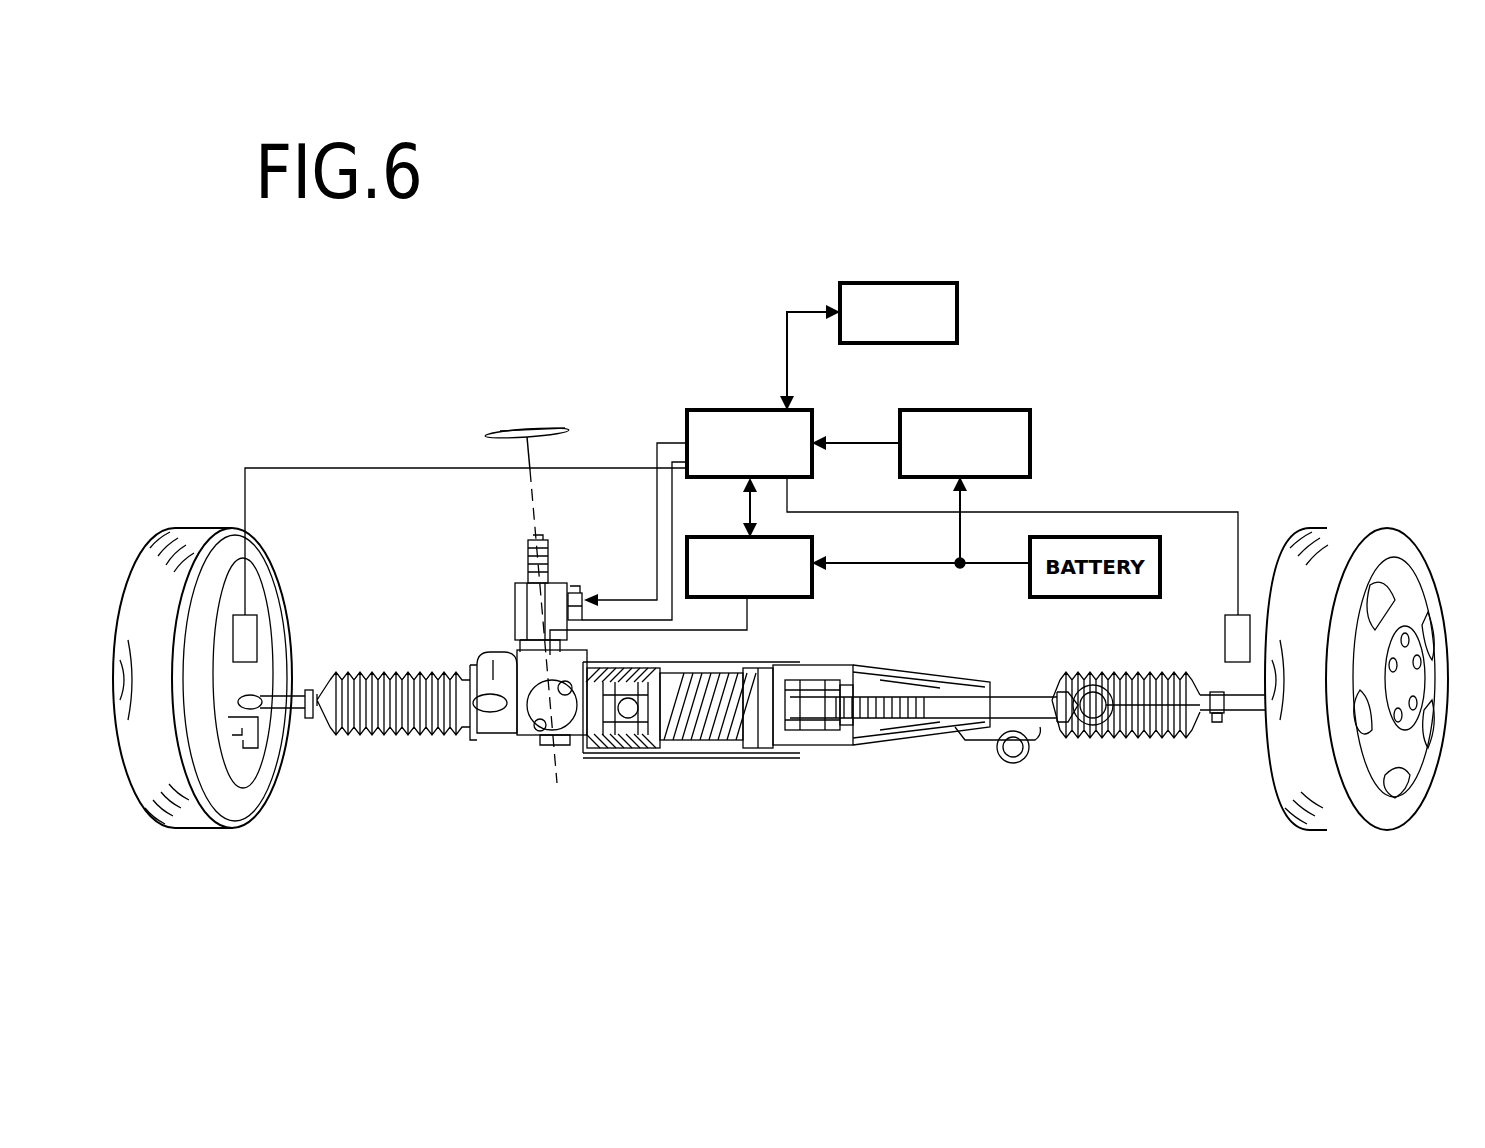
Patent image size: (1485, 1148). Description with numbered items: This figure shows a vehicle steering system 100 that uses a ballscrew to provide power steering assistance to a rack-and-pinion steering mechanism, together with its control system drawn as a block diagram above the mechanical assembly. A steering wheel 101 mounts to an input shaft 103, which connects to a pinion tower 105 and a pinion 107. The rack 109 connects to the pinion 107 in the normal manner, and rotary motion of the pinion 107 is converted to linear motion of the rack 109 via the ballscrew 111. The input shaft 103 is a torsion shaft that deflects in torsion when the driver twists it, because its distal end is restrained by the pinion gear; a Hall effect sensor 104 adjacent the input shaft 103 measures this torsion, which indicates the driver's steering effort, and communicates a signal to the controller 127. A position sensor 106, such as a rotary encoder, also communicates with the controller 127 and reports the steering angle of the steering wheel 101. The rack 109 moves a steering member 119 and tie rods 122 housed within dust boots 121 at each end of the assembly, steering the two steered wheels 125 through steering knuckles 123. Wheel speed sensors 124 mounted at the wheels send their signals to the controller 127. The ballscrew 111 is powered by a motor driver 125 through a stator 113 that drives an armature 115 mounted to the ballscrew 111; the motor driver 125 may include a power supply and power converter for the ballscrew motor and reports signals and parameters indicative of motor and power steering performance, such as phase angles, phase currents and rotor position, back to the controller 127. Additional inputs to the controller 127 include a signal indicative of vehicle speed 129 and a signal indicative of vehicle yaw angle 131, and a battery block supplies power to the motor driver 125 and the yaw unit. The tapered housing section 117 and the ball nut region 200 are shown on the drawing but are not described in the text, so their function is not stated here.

The vehicle steering system 100 is at (378, 395).
The steering wheel 101 is at (512, 428).
The input shaft 103 is at (527, 548).
The Hall effect sensor 104 is at (572, 592).
The pinion tower 105 is at (527, 603).
The position sensor 106 is at (612, 612).
The pinion 107 is at (493, 708).
The rack 109 is at (622, 690).
The ballscrew 111 is at (893, 688).
The stator 113 is at (707, 755).
The armature 115 is at (712, 665).
The ball screw housing 117 is at (825, 665).
The steering member 119 is at (967, 692).
The dust boot 121 is at (363, 737).
The tie rod 122 is at (1153, 707).
The steering knuckle 123 is at (258, 700).
The wheel speed sensor 124 is at (258, 645).
The steered wheel / motor driver 125 is at (285, 580).
The controller 127 is at (793, 458).
The vehicle speed signal 129 is at (945, 310).
The vehicle yaw angle signal 131 is at (1008, 407).
The ball nut assembly 200 is at (815, 730).